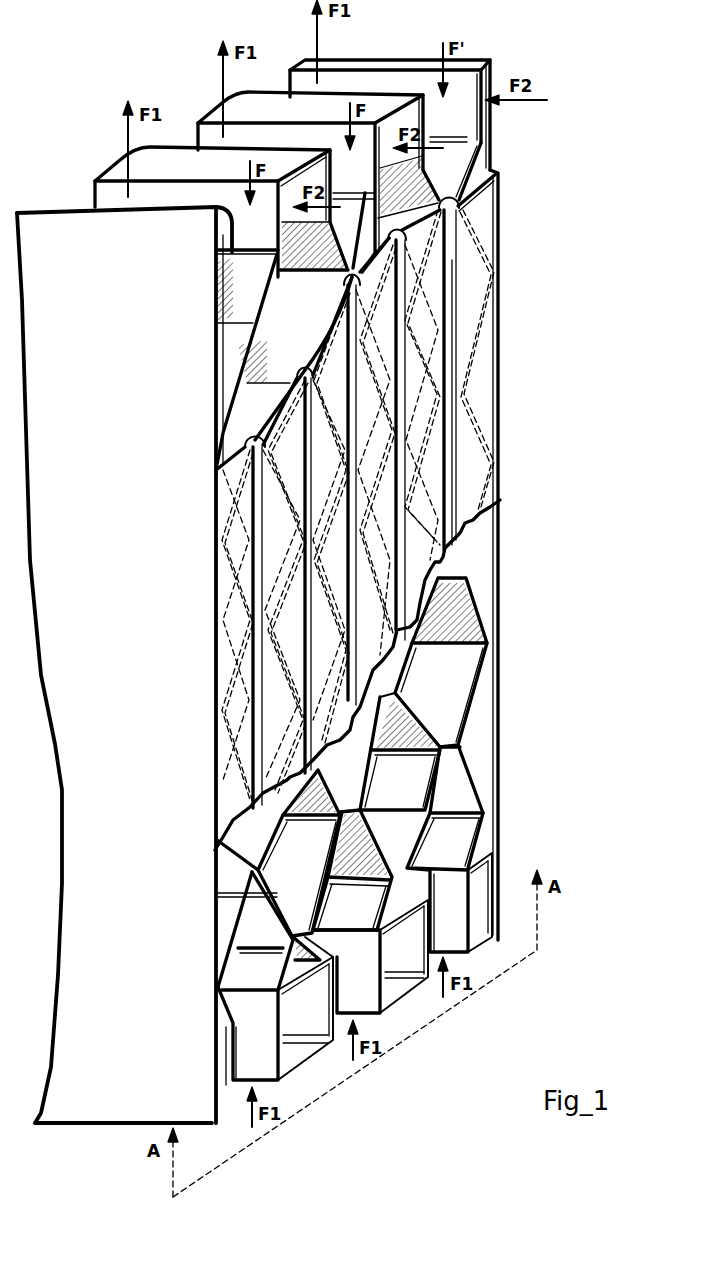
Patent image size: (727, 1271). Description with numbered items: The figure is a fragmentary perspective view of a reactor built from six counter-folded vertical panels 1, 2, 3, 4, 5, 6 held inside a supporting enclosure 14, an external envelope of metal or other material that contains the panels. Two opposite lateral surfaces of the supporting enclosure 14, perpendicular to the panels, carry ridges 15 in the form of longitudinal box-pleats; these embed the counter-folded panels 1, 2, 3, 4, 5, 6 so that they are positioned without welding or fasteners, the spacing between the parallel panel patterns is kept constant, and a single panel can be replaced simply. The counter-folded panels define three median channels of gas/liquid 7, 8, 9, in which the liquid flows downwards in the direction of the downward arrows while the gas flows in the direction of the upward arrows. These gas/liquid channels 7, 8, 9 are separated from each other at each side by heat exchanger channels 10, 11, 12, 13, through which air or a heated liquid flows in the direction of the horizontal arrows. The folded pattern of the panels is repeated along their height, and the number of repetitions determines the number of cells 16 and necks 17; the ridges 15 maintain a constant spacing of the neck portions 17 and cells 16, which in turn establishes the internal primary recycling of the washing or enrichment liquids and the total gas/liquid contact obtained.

The counter-folded vertical panel 1 is at (232, 853).
The counter-folded vertical panel 2 is at (270, 828).
The counter-folded vertical panel 3 is at (285, 890).
The counter-folded vertical panel 4 is at (387, 680).
The counter-folded vertical panel 5 is at (420, 623).
The counter-folded vertical panel 6 is at (477, 702).
The median channel of gas/liquid 7 is at (249, 287).
The median channel of gas/liquid 8 is at (347, 235).
The median channel of gas/liquid 9 is at (441, 179).
The heat exchanger channel 10 is at (228, 359).
The heat exchanger channel 11 is at (291, 312).
The heat exchanger channel 12 is at (416, 202).
The heat exchanger channel 13 is at (487, 155).
The supporting enclosure 14 is at (485, 243).
The ridges 15 is at (402, 370).
The cell 16 is at (445, 718).
The neck 17 is at (363, 810).